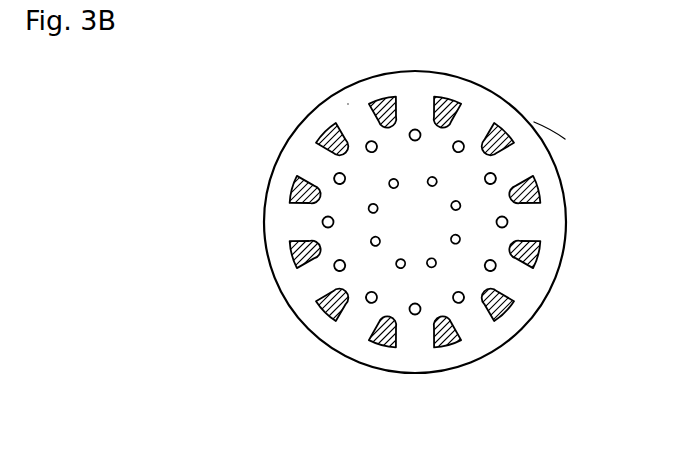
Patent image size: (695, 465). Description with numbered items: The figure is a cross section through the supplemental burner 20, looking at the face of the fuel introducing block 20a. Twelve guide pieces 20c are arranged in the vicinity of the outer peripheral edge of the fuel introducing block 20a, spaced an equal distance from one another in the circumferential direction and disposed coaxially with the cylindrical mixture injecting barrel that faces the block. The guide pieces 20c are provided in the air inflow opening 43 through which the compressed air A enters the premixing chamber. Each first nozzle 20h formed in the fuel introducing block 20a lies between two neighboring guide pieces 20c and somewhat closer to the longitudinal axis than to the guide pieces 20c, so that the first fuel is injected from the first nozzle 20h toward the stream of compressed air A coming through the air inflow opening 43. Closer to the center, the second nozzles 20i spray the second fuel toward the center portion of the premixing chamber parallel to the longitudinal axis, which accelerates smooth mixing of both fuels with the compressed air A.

The supplemental burner 20 is at (505, 93).
The fuel introducing block 20a is at (553, 150).
The guide pieces 20c is at (290, 250).
The first nozzle 20h is at (411, 128).
The second nozzle 20i is at (429, 187).
The air inflow opening 43 is at (348, 104).
The compressed air A is at (423, 91).